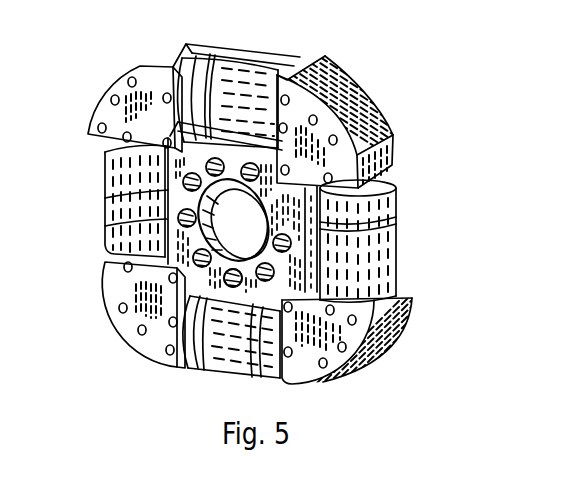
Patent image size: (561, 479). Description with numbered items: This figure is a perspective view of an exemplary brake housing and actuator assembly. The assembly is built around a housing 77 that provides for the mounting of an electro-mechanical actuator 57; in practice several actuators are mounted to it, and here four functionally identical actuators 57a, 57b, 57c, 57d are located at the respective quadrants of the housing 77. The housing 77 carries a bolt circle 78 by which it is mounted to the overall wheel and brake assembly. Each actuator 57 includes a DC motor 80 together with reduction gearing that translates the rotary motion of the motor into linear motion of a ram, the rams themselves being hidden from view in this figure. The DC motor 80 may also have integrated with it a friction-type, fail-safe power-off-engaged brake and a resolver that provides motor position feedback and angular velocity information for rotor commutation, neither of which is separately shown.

The electro-mechanical actuator 57 is at (127, 55).
The actuator 57a is at (120, 78).
The actuator 57b is at (353, 77).
The actuator 57c is at (368, 357).
The actuator 57d is at (120, 320).
The housing 77 is at (168, 193).
The bolt circle 78 is at (216, 296).
The DC motor 80 is at (256, 57).